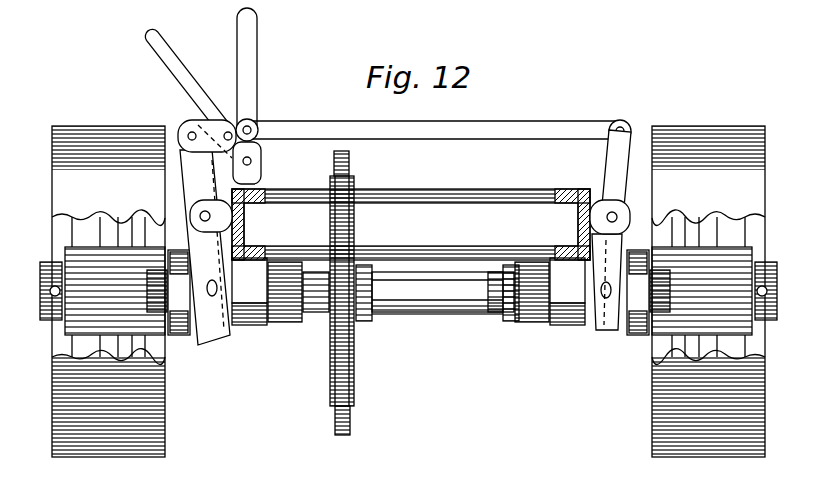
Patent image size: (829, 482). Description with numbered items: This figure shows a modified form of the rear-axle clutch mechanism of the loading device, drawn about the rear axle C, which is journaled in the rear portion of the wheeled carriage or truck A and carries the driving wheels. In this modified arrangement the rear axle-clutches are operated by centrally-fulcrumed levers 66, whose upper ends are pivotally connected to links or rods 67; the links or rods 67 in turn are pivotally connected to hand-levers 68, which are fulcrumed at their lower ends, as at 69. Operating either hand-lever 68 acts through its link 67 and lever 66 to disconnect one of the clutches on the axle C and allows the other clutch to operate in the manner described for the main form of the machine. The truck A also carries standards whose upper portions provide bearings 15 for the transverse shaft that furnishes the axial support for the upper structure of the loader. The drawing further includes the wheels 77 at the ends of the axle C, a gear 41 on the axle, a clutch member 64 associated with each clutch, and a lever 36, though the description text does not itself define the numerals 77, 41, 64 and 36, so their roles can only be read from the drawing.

The wheel 77 is at (110, 446).
The rear axle C is at (408, 292).
The wheeled carriage or truck A is at (519, 204).
The gear 41 is at (355, 384).
The bearings 15 is at (266, 323).
The clutch member 64 is at (190, 332).
The lever 36 is at (189, 180).
The hand-levers 68 is at (186, 58).
The links or rods 67 is at (200, 124).
The fulcrum of hand-lever 69 is at (261, 162).
The centrally-fulcrumed levers 66 is at (624, 153).